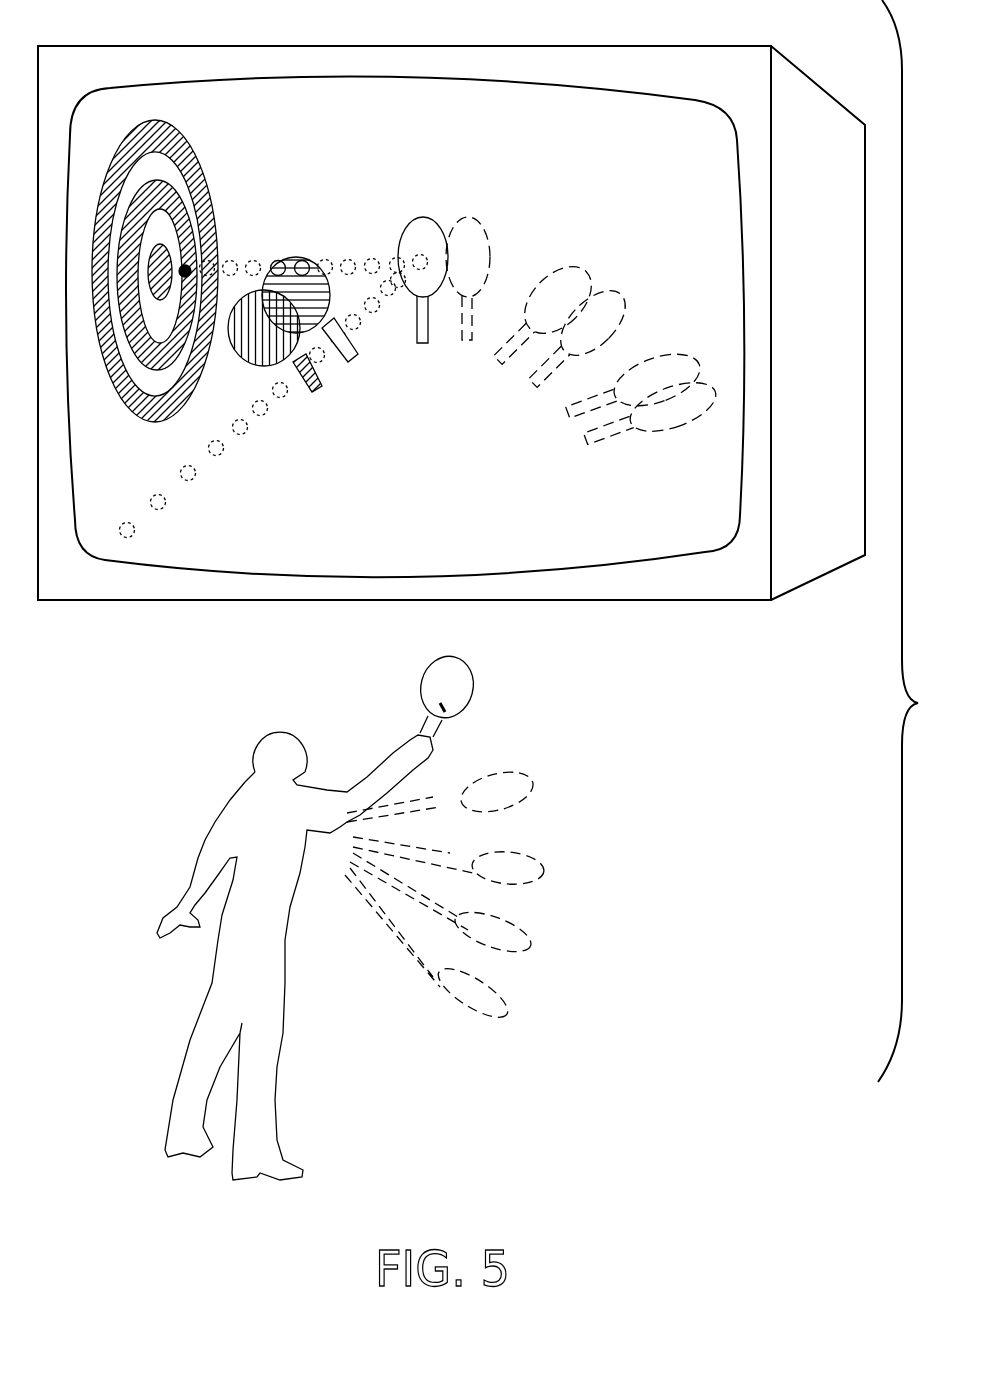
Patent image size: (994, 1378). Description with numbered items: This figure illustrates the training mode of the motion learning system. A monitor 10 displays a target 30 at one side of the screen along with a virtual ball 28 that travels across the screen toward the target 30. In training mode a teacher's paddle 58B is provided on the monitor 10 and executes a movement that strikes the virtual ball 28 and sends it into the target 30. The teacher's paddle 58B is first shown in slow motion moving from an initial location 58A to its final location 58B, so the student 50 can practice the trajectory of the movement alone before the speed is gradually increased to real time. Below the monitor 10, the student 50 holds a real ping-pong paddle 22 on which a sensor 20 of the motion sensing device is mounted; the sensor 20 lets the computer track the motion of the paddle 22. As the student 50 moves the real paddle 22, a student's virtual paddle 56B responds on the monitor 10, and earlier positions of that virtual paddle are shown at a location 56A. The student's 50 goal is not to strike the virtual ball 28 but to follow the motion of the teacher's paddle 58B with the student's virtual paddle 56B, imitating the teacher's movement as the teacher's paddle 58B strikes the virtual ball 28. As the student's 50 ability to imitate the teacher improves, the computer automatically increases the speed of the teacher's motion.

The monitor 10 is at (830, 93).
The sensor 20 is at (446, 713).
The ping-pong paddle 22 is at (465, 675).
The virtual ball 28 is at (184, 270).
The target 30 is at (120, 405).
The student 50 is at (228, 803).
The initial location of student's virtual paddle 56A is at (645, 432).
The student's virtual paddle 56B is at (352, 352).
The initial location of teacher's paddle 58A is at (658, 365).
The teacher's paddle 58B is at (306, 388).